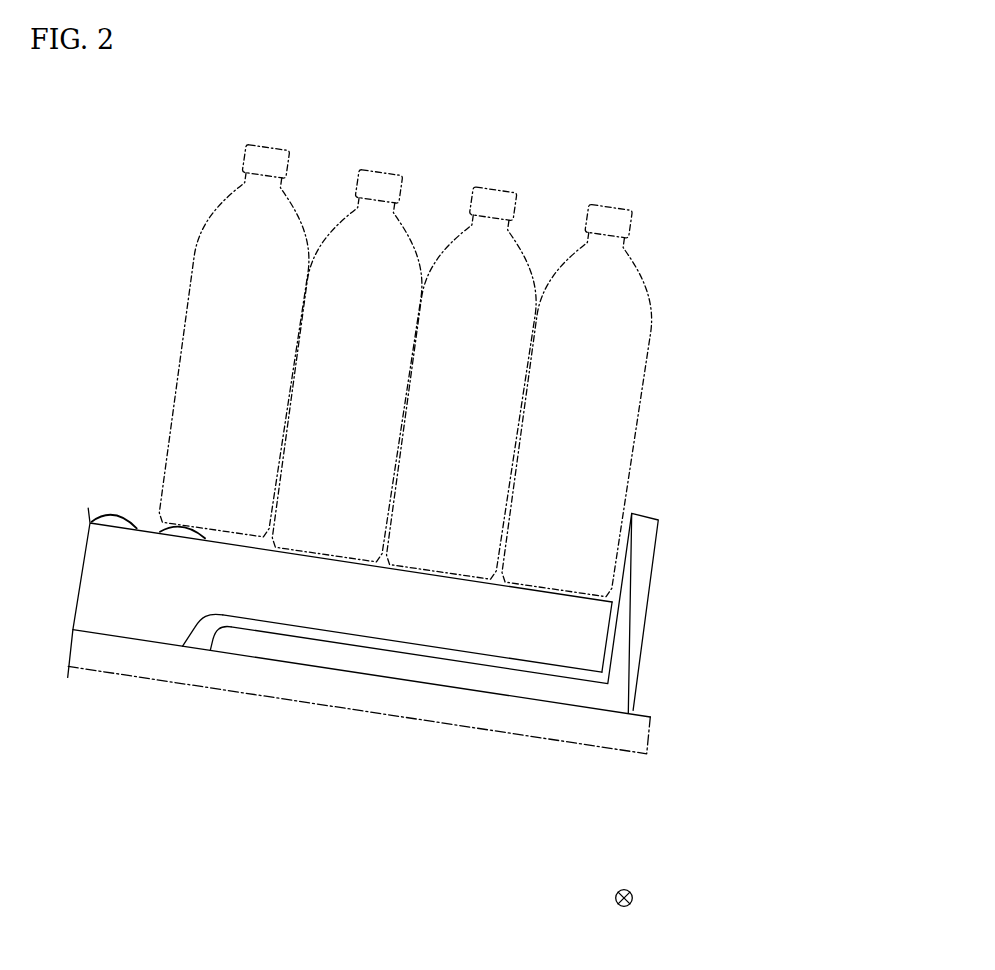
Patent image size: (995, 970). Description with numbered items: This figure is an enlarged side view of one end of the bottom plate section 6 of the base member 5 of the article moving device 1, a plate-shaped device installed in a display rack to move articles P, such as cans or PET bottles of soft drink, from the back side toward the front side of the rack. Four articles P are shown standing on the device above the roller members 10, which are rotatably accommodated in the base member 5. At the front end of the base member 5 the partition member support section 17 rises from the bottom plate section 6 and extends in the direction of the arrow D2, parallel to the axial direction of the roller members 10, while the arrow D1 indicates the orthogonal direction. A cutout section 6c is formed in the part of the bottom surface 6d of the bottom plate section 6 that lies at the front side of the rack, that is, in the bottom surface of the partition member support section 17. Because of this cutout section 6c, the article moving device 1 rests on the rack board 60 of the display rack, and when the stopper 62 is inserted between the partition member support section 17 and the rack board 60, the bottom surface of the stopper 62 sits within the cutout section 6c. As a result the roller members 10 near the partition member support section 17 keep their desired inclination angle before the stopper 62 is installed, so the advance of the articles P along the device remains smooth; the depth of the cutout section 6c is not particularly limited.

The article moving device 1 is at (621, 627).
The base member 5 is at (622, 647).
The bottom plate section 6 is at (613, 664).
The cutout section 6c is at (203, 631).
The bottom surface 6d is at (130, 639).
The roller members 10 is at (180, 527).
The partition member support section 17 is at (594, 597).
The rack board 60 is at (650, 735).
The stopper 62 is at (632, 688).
The articles P is at (265, 147).
The arrow D1 is at (633, 899).
The arrow D2 is at (625, 889).